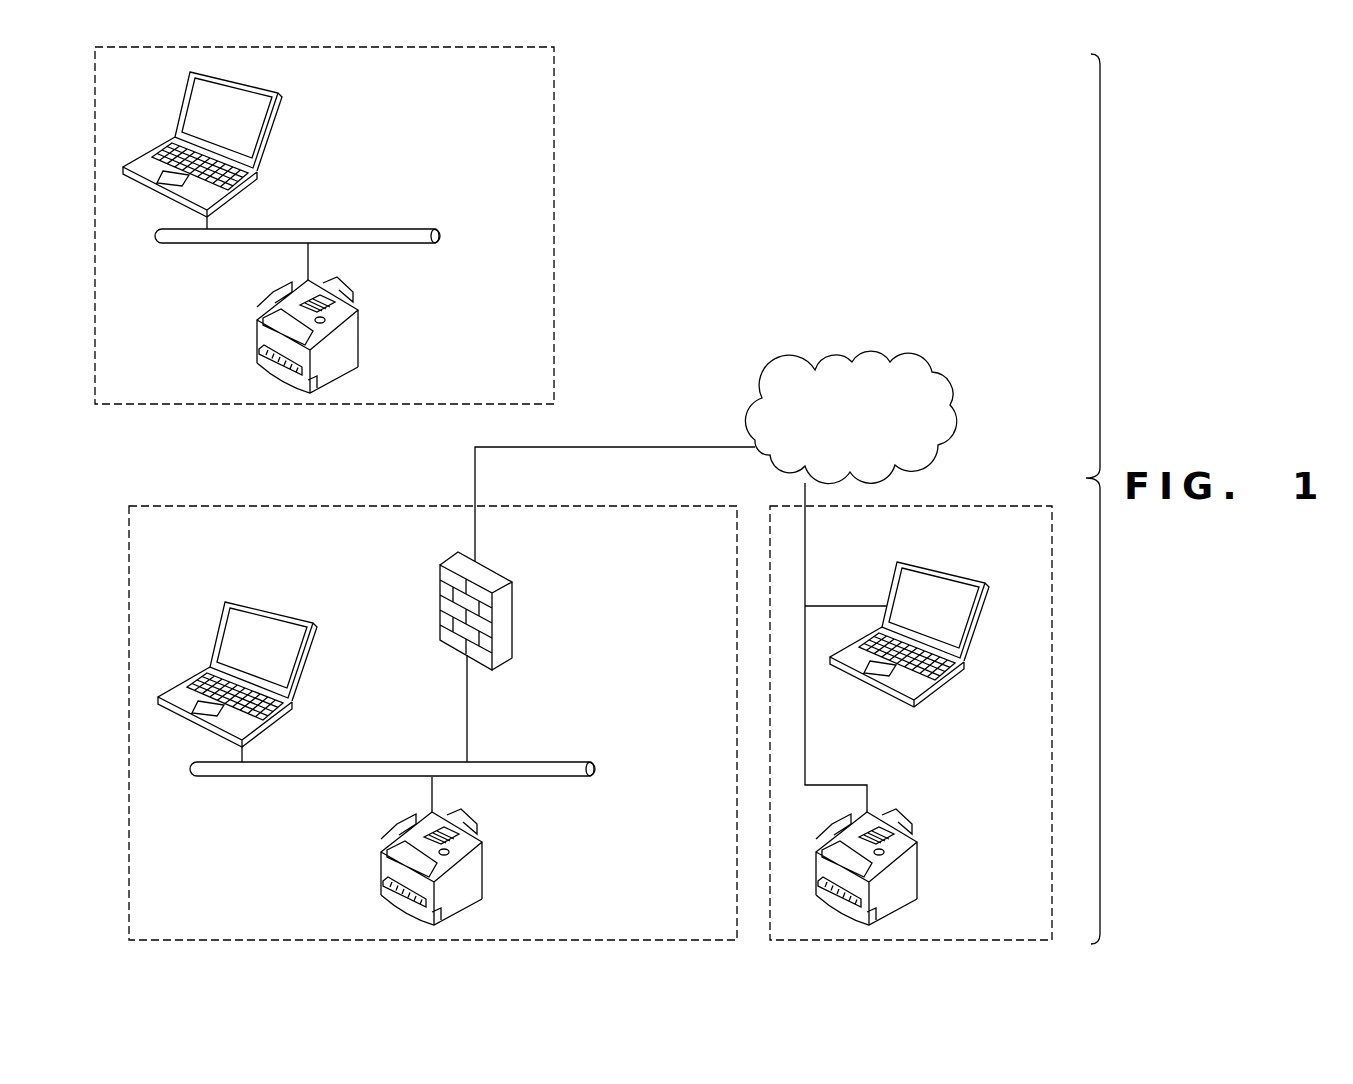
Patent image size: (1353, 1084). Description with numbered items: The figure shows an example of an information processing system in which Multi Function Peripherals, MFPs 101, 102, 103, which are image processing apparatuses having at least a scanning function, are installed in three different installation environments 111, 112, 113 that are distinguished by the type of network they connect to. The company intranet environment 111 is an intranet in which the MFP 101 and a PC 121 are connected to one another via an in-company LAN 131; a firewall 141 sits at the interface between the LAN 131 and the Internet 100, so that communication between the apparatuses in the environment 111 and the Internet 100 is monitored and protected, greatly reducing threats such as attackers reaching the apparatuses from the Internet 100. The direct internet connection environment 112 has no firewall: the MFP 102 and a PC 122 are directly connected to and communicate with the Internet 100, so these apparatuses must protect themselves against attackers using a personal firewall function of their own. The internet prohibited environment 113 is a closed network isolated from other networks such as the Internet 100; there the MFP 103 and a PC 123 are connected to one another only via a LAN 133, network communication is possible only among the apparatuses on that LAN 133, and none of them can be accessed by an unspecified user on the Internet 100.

The Internet 100 is at (930, 362).
The company intranet environment 111 is at (317, 506).
The direct internet connection environment 112 is at (1004, 506).
The internet prohibited environment 113 is at (555, 72).
The MFP 101 is at (484, 843).
The MFP 102 is at (919, 843).
The MFP 103 is at (360, 312).
The PC 121 is at (292, 612).
The PC 122 is at (960, 568).
The PC 123 is at (255, 83).
The in-company LAN 131 is at (507, 762).
The LAN 133 is at (344, 228).
The firewall 141 is at (513, 585).